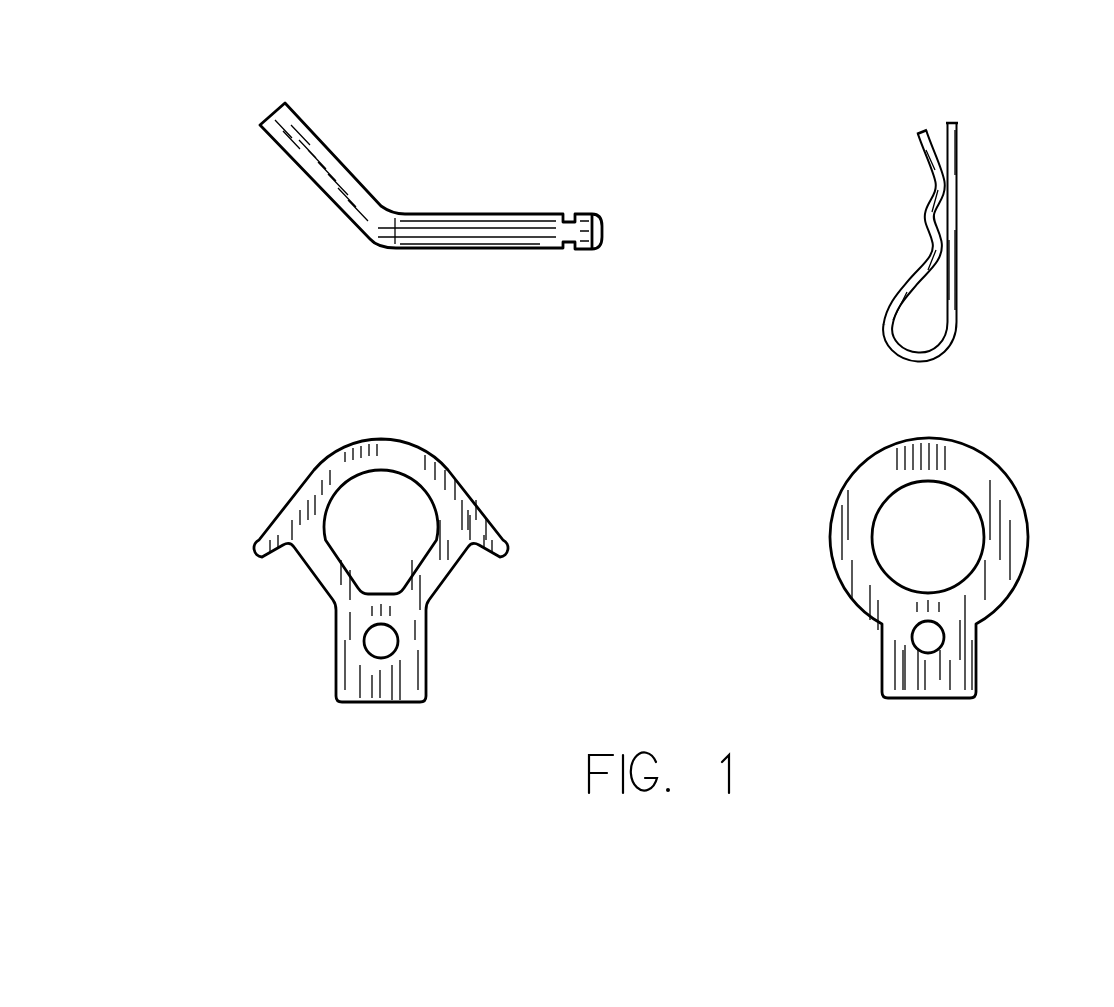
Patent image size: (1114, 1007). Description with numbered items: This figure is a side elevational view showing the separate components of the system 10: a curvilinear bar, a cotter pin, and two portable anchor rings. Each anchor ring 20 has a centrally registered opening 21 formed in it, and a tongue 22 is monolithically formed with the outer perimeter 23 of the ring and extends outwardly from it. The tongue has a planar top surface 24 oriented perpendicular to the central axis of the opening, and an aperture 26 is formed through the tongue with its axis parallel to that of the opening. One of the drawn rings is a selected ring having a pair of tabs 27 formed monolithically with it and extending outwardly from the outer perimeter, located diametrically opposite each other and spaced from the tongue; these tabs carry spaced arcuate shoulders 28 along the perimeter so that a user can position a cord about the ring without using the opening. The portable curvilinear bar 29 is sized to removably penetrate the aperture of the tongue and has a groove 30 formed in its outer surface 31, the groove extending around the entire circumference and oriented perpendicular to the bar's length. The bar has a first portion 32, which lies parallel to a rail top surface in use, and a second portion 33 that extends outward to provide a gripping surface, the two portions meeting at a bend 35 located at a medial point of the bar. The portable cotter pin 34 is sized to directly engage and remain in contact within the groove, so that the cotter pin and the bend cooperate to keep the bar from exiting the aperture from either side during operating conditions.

The system 10 is at (728, 172).
The portable anchor ring 20 is at (433, 570).
The opening 21 is at (400, 508).
The tongue 22 is at (386, 694).
The outer perimeter 23 is at (405, 420).
The planar top surface 24 is at (425, 680).
The aperture 26 is at (381, 641).
The tab 27 is at (290, 509).
The arcuate shoulder 28 is at (260, 553).
The portable curvilinear bar 29 is at (492, 246).
The groove 30 is at (571, 218).
The outer surface 31 is at (435, 195).
The first portion 32 is at (538, 223).
The second portion 33 is at (333, 186).
The portable cotter pin 34 is at (958, 202).
The bend 35 is at (373, 258).